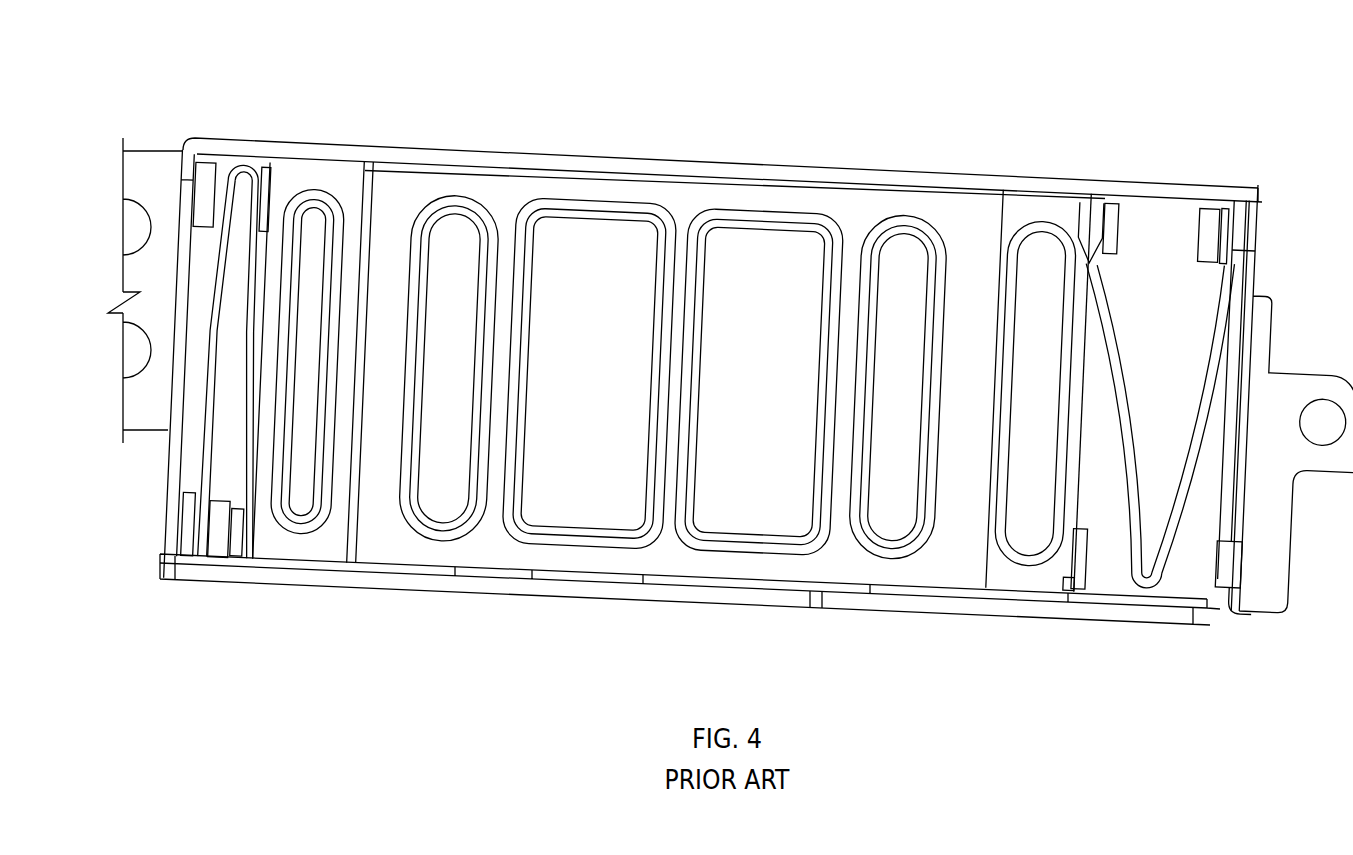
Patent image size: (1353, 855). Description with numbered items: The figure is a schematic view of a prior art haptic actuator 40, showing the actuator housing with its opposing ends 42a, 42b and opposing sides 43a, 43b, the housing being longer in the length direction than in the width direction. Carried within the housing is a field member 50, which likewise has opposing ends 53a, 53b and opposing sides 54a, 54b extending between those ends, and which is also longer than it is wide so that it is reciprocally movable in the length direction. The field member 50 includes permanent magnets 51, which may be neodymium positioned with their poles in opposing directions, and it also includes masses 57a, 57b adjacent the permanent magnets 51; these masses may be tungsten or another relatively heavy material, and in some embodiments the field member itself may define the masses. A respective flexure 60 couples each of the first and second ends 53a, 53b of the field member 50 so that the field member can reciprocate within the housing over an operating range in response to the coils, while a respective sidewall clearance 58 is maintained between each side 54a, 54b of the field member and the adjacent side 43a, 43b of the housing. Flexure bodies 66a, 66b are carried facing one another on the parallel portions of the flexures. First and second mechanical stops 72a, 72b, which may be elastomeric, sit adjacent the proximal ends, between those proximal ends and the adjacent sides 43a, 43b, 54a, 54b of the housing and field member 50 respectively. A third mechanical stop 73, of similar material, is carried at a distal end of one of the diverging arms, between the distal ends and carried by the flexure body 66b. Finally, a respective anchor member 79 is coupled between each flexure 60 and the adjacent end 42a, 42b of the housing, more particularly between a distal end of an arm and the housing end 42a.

The haptic actuator 40 is at (500, 107).
The end of actuator housing 42a is at (163, 513).
The end of actuator housing 42b is at (1243, 610).
The side of actuator housing 43a is at (825, 168).
The side of actuator housing 43b is at (863, 609).
The field member 50 is at (665, 540).
The permanent magnets 51 is at (725, 255).
The end of field member 53a is at (262, 548).
The end of field member 53b is at (1080, 588).
The side of field member 54a is at (577, 165).
The side of field member 54b is at (645, 582).
The mass 57a is at (318, 505).
The mass 57b is at (1028, 545).
The sidewall clearance 58 is at (772, 590).
The flexure 60 is at (240, 165).
The flexure body 66a is at (243, 560).
The flexure body 66b is at (195, 545).
The first mechanical stop 72a is at (272, 160).
The second mechanical stop 72b is at (190, 140).
The third mechanical stop 73 is at (232, 545).
The anchor member 79 is at (185, 560).